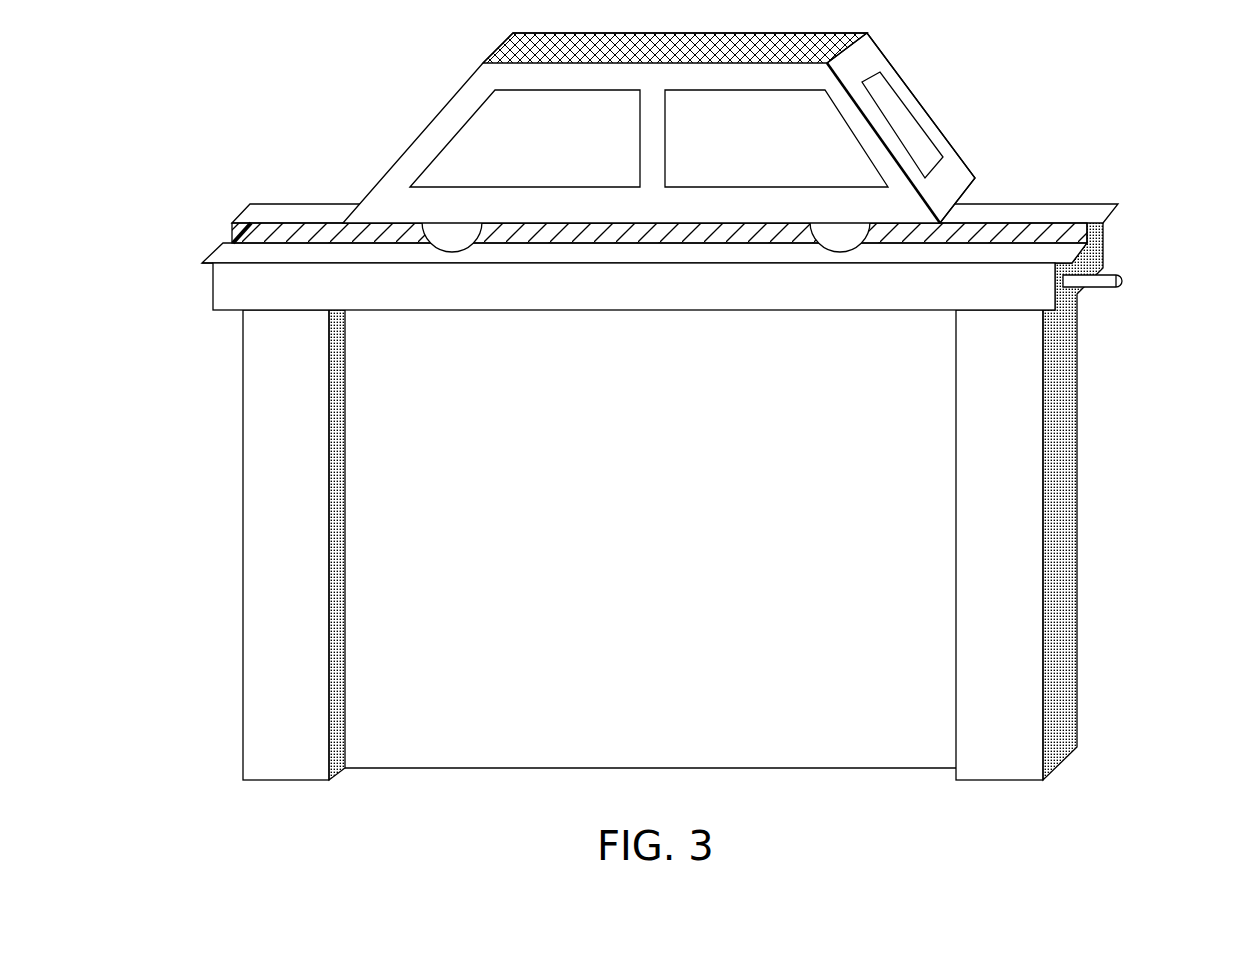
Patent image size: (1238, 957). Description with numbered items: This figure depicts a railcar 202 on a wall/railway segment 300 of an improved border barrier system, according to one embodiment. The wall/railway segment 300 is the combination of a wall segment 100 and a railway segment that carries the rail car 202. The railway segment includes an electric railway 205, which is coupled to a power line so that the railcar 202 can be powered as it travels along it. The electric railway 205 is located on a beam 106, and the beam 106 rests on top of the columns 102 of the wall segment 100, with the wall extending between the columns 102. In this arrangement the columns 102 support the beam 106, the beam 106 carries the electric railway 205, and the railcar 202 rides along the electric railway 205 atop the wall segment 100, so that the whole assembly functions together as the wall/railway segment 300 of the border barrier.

The wall segment 100 is at (656, 468).
The columns 102 is at (1080, 514).
The beam 106 is at (1100, 240).
The electric railway 205 is at (1021, 203).
The railcar 202 is at (920, 100).
The wall/railway segment 300 is at (558, 141).